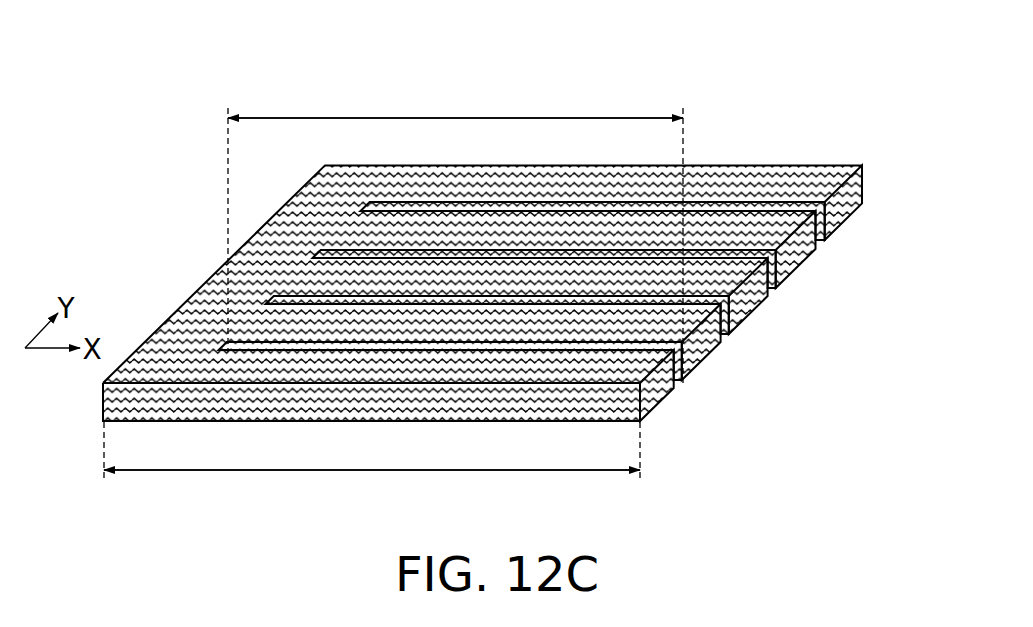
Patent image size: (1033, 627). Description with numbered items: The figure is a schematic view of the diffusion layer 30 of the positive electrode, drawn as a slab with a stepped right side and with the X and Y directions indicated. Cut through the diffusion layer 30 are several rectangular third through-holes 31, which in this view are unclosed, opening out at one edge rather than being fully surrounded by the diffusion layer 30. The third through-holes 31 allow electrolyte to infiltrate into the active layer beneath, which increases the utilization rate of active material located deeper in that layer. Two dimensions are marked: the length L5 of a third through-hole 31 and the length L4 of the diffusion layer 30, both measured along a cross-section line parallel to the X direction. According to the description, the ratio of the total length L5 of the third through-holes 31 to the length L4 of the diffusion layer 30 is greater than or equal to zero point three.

The diffusion layer 30 is at (722, 278).
The third through-hole 31 is at (782, 268).
The length of the diffusion layer L4 is at (372, 450).
The length of the third through-hole L5 is at (455, 231).